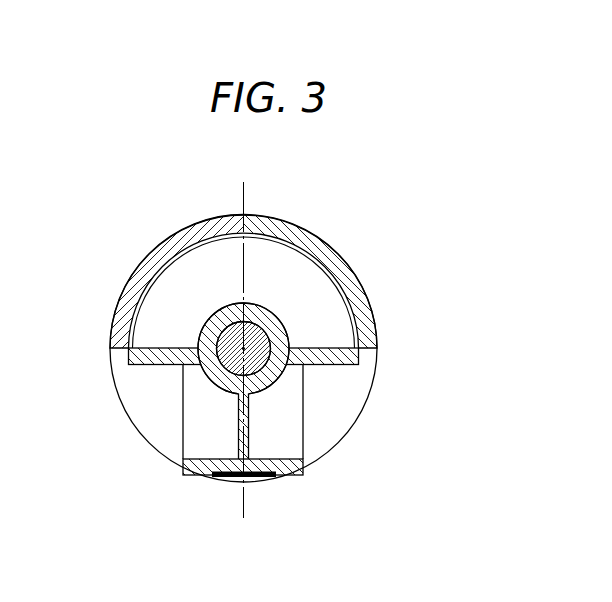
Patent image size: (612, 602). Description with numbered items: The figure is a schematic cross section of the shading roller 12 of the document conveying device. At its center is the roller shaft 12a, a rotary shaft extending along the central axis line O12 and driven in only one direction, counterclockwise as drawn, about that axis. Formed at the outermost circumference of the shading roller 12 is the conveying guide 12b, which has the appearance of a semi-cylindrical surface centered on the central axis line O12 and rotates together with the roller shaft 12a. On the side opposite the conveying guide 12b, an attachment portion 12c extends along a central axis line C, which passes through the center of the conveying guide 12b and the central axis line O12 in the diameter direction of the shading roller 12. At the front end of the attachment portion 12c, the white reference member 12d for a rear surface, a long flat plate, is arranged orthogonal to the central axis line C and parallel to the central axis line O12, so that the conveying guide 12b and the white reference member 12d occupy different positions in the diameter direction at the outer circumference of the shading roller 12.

The shading roller 12 is at (380, 206).
The roller shaft 12a is at (258, 366).
The conveying guide 12b is at (154, 261).
The attachment portion 12c is at (289, 472).
The white reference member for a rear surface 12d is at (227, 477).
The central axis line O12 is at (244, 349).
The central axis line C is at (244, 201).